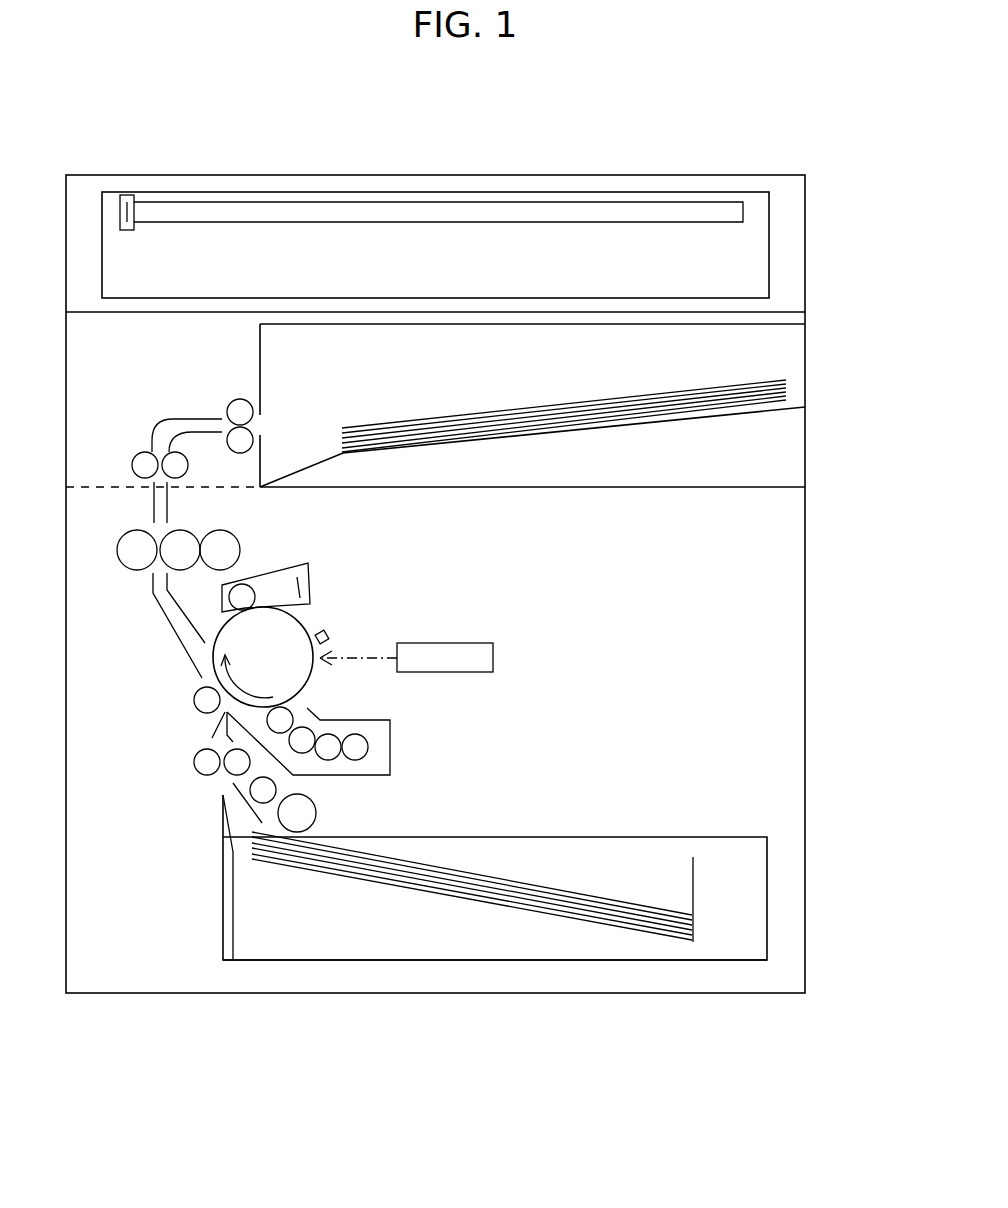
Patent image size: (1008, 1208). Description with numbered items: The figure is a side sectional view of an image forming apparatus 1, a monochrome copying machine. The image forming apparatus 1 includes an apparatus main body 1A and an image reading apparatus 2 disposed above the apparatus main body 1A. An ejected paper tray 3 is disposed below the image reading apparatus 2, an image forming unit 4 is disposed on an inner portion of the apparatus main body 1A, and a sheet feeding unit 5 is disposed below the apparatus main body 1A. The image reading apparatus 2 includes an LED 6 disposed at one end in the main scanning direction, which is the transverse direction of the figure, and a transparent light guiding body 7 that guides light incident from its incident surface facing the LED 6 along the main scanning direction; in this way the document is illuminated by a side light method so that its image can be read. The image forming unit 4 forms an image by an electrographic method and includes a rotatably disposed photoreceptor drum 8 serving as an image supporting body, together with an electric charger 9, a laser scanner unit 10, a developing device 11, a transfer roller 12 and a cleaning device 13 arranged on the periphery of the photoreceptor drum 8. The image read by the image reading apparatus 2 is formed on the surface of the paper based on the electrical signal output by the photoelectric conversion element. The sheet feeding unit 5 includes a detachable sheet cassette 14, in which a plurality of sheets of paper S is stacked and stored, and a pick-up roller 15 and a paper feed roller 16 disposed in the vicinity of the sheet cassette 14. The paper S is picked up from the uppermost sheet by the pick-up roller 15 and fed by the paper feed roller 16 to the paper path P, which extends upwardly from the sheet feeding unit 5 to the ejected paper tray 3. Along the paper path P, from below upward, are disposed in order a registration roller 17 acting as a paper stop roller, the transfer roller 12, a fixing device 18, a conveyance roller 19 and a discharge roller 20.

The image forming apparatus 1 is at (722, 145).
The apparatus main body 1A is at (806, 728).
The image reading apparatus 2 is at (778, 222).
The ejected paper tray 3 is at (318, 462).
The image forming unit 4 is at (330, 592).
The sheet feeding unit 5 is at (180, 884).
The LED 6 is at (125, 232).
The transparent light guiding body 7 is at (532, 228).
The photoreceptor drum 8 is at (312, 675).
The electric charger 9 is at (328, 630).
The laser scanner unit 10 is at (475, 643).
The developing device 11 is at (393, 750).
The transfer roller 12 is at (195, 702).
The cleaning device 13 is at (292, 562).
The sheet cassette 14 is at (515, 962).
The pick-up roller 15 is at (318, 812).
The paper feed roller 16 is at (248, 800).
The registration roller 17 is at (190, 765).
The fixing device 18 is at (128, 575).
The conveyance roller 19 is at (140, 452).
The discharge roller 20 is at (240, 398).
The paper path P is at (178, 630).
The paper S is at (583, 402).